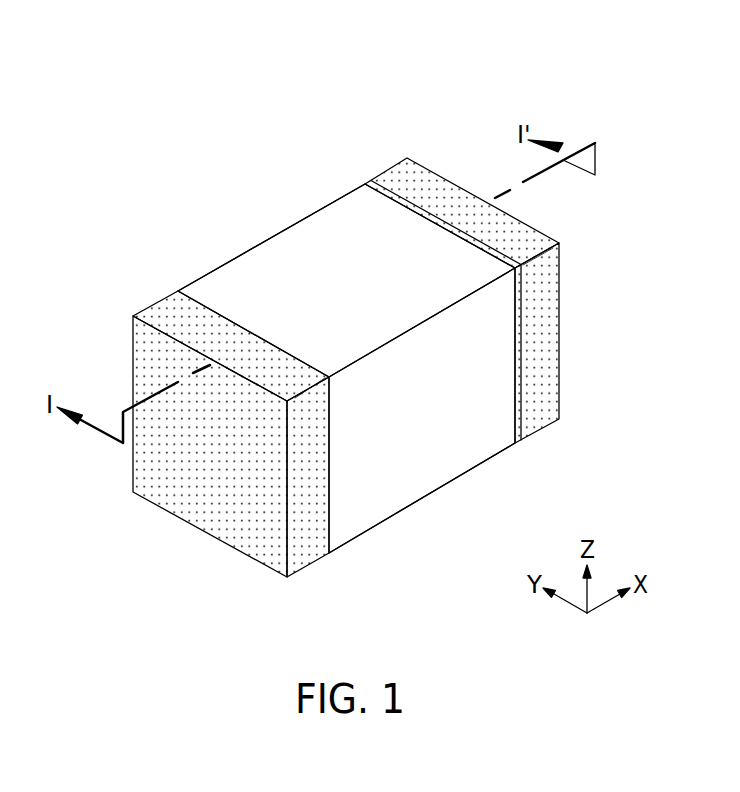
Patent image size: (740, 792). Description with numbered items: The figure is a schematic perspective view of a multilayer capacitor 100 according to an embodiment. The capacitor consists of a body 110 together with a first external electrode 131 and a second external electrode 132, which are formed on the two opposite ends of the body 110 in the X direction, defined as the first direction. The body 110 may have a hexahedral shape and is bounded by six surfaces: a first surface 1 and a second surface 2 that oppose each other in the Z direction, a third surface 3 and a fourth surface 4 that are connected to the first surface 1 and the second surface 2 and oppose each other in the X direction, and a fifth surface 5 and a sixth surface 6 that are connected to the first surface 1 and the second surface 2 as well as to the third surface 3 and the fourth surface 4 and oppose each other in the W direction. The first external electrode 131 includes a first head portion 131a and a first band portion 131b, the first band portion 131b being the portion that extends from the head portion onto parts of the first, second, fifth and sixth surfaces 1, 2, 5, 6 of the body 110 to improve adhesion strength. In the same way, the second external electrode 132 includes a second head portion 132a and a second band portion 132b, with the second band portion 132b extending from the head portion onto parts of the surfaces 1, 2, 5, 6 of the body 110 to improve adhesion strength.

The multilayer capacitor 100 is at (184, 52).
The body 110 is at (282, 268).
The first surface 1 is at (379, 505).
The second surface 2 is at (341, 238).
The third surface 3 is at (152, 479).
The fourth surface 4 is at (553, 318).
The fifth surface 5 is at (466, 451).
The sixth surface 6 is at (246, 292).
The first external electrode 131 is at (128, 230).
The first head portion 131a is at (150, 355).
The first band portion 131b is at (158, 313).
The second external electrode 132 is at (421, 62).
The second head portion 132a is at (449, 168).
The second band portion 132b is at (398, 177).